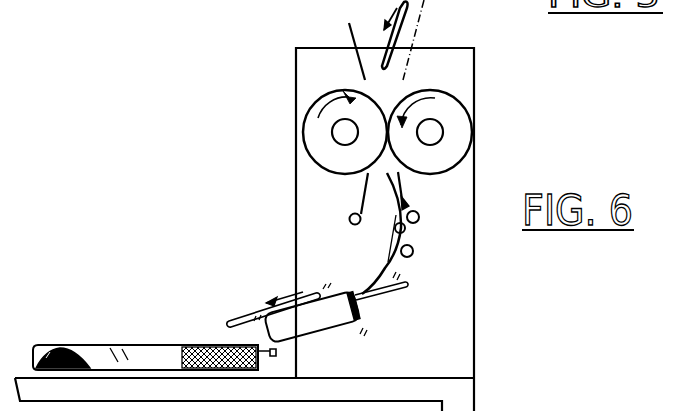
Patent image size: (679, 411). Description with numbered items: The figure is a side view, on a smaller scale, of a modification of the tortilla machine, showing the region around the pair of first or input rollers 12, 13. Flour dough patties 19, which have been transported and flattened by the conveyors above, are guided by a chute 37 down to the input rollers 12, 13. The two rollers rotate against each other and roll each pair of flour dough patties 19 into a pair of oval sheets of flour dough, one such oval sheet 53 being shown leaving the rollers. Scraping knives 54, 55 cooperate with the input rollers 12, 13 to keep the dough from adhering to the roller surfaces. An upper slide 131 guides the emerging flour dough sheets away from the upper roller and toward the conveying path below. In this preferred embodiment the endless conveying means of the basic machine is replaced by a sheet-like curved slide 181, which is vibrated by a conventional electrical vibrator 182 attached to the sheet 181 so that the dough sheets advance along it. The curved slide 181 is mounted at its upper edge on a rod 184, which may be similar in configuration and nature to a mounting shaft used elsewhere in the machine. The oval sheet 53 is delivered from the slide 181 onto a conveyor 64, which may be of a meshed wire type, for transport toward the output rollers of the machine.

The input roller 12 is at (308, 137).
The input roller 13 is at (475, 132).
The flour dough patty 19 is at (409, 40).
The chute 37 is at (350, 29).
The oval sheet of flour dough 53 is at (246, 321).
The scraping knife 54 is at (366, 176).
The scraping knife 55 is at (405, 183).
The conveyor 64 is at (103, 343).
The upper slide 131 is at (386, 238).
The curved slide 181 is at (358, 296).
The electrical vibrator 182 is at (352, 332).
The rod 184 is at (407, 243).